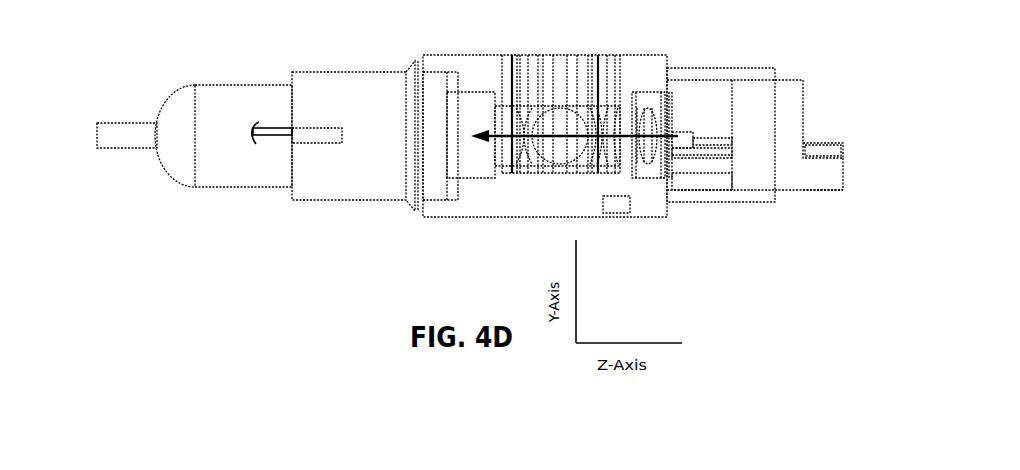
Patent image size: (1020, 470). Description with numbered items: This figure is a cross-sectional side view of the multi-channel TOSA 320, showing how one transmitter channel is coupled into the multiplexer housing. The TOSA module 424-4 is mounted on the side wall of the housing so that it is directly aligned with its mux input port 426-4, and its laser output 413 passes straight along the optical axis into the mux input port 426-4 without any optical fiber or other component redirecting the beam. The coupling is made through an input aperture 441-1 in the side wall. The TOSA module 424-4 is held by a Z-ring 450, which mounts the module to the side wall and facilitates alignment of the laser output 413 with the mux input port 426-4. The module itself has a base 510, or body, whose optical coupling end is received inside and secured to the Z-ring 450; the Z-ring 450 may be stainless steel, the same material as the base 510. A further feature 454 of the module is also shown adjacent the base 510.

The multi-channel TOSA 320 is at (290, 58).
The laser output 413 is at (548, 139).
The input aperture 441-1 is at (642, 106).
The Z-ring 450 is at (713, 55).
The mux input port 426-4 is at (674, 148).
The TOSA module 424-4 is at (786, 54).
The latch 454 is at (827, 130).
The base 510 is at (803, 205).